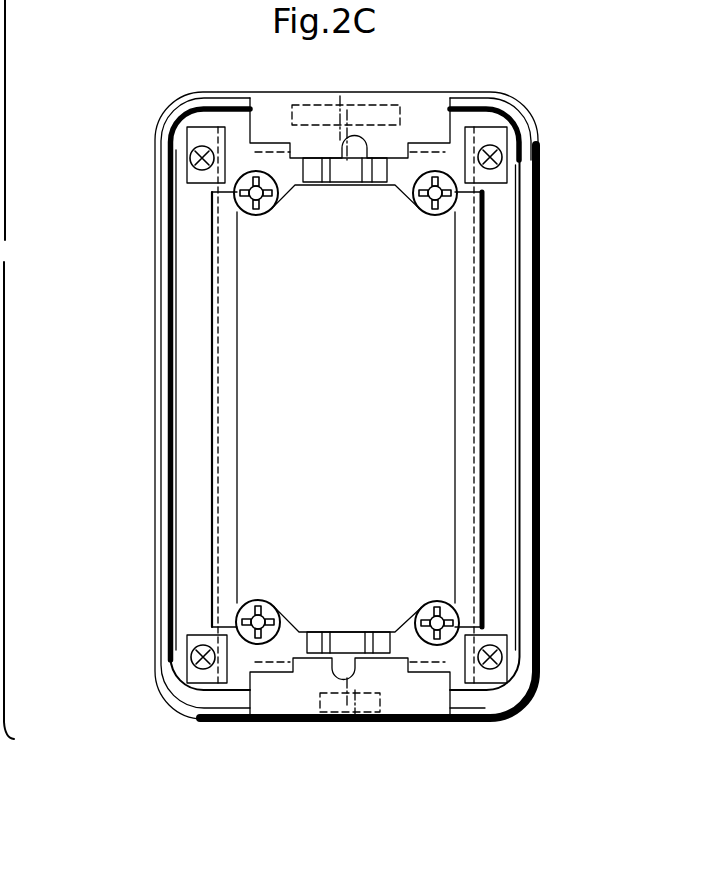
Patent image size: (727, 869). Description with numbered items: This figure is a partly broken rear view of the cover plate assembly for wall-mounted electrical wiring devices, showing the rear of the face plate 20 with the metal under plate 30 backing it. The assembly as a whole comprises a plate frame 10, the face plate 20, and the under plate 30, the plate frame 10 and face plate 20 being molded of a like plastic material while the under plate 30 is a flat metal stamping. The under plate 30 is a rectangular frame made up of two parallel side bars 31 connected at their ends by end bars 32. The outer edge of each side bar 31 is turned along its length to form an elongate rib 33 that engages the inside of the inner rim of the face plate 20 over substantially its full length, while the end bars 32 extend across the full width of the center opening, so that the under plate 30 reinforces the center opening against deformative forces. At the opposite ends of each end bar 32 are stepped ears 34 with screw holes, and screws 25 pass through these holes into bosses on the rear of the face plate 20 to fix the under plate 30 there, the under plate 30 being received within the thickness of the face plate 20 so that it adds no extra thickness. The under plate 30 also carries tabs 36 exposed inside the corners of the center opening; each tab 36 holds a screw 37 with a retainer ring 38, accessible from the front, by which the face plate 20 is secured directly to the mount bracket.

The plate frame 10 is at (323, 90).
The face plate 20 is at (150, 300).
The screws 25 is at (195, 153).
The under plate 30 is at (490, 283).
The side bars 31 is at (230, 403).
The end bars 32 is at (242, 143).
The elongate rib 33 is at (210, 356).
The stepped ears 34 is at (203, 680).
The tabs 36 is at (283, 640).
The screw 37 is at (275, 197).
The retainer ring 38 is at (268, 210).